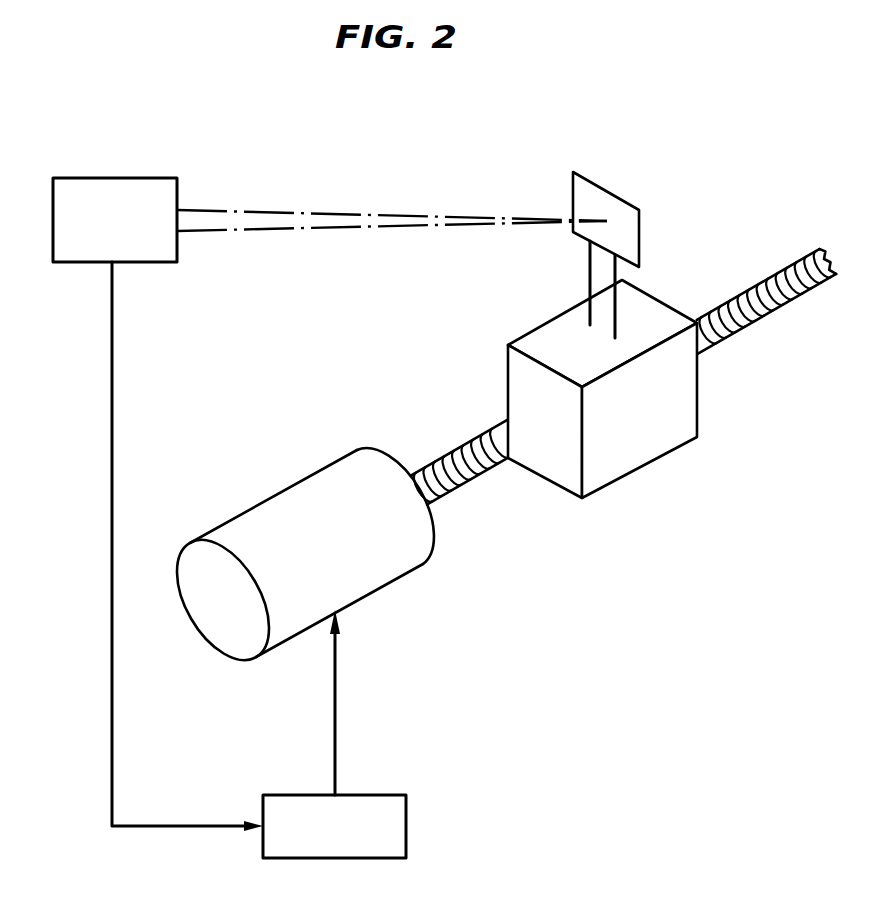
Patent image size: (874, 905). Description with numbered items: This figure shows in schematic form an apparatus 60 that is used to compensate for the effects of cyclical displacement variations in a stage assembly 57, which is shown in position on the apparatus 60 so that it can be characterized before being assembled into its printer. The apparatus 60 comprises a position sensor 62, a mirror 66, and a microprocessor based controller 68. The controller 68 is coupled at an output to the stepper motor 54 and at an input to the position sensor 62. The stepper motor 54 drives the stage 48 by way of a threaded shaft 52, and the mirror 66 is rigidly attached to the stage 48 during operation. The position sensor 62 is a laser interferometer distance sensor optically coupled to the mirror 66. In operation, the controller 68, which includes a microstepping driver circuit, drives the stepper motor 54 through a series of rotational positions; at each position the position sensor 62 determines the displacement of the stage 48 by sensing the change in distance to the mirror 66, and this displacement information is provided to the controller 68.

The stage 48 is at (652, 461).
The lead screw 52 is at (457, 447).
The stepper motor 54 is at (282, 493).
The stage assembly 57 is at (704, 412).
The apparatus 60 is at (390, 150).
The position sensor 62 is at (142, 178).
The mirror 66 is at (640, 237).
The controller 68 is at (407, 810).